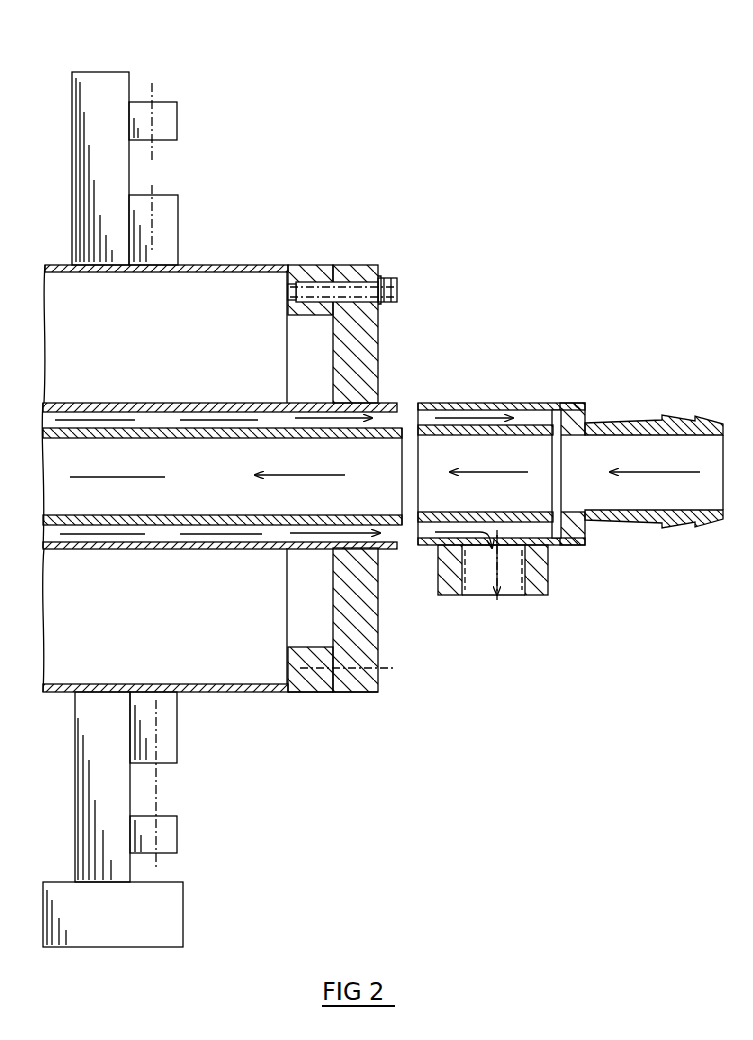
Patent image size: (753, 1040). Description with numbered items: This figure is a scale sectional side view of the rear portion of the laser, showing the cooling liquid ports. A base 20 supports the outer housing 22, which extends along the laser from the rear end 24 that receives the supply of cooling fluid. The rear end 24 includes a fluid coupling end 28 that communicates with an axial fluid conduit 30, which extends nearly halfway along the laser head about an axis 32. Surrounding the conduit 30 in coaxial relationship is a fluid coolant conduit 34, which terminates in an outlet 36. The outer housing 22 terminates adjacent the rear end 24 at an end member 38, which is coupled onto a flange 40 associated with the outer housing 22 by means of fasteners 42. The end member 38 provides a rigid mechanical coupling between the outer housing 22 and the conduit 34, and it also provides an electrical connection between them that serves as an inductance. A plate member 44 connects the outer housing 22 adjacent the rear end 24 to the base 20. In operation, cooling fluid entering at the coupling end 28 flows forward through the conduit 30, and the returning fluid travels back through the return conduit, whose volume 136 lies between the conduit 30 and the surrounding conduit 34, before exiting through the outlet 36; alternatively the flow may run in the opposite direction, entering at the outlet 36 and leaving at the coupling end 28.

The base 20 is at (108, 935).
The outer housing 22 is at (213, 265).
The rear end 24 is at (617, 558).
The fluid coupling end 28 is at (605, 430).
The axial fluid conduit 30 is at (515, 430).
The axis 32 is at (343, 475).
The fluid coolant conduit 34 is at (458, 404).
The outlet 36 is at (512, 598).
The end member 38 is at (347, 308).
The flange 40 is at (313, 680).
The fasteners 42 is at (395, 288).
The plate member 44 is at (110, 80).
The volume 136 is at (40, 412).